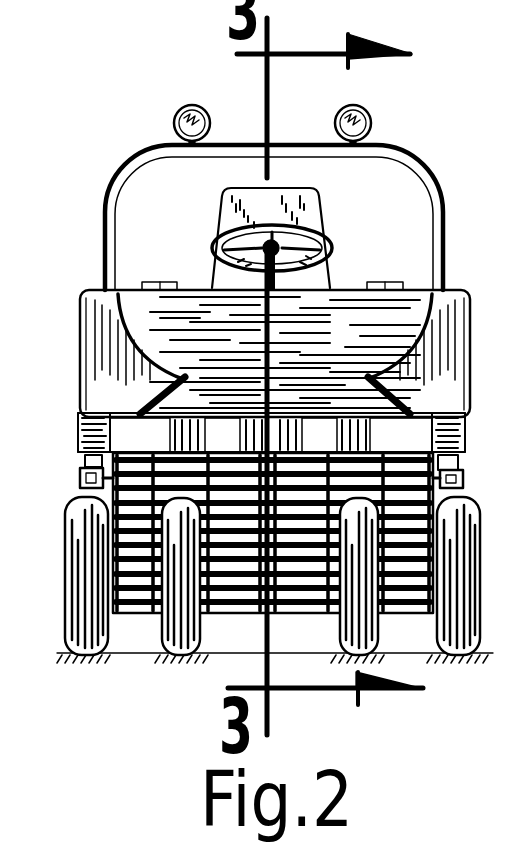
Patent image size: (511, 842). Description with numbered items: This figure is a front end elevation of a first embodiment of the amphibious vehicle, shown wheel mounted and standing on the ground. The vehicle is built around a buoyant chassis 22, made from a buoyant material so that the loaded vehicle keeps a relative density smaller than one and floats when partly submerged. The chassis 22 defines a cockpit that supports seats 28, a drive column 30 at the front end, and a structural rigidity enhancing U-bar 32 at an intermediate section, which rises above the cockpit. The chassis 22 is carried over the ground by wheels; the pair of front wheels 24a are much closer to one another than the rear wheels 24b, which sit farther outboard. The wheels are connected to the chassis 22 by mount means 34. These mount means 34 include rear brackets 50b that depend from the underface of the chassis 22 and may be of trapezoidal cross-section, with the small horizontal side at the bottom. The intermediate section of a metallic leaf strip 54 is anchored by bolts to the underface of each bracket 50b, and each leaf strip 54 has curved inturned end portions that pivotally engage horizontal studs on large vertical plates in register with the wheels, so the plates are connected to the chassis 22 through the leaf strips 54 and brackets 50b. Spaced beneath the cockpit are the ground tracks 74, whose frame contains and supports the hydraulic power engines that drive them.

The buoyant chassis 22 is at (468, 292).
The front wheels 24a is at (168, 657).
The rear wheels 24b is at (112, 657).
The seats 28 is at (227, 210).
The drive column 30 is at (327, 240).
The U-bar 32 is at (110, 217).
The mount means 34 is at (458, 462).
The rear brackets 50b is at (80, 432).
The metallic leaf strip 54 is at (82, 463).
The ground tracks 74 is at (302, 608).